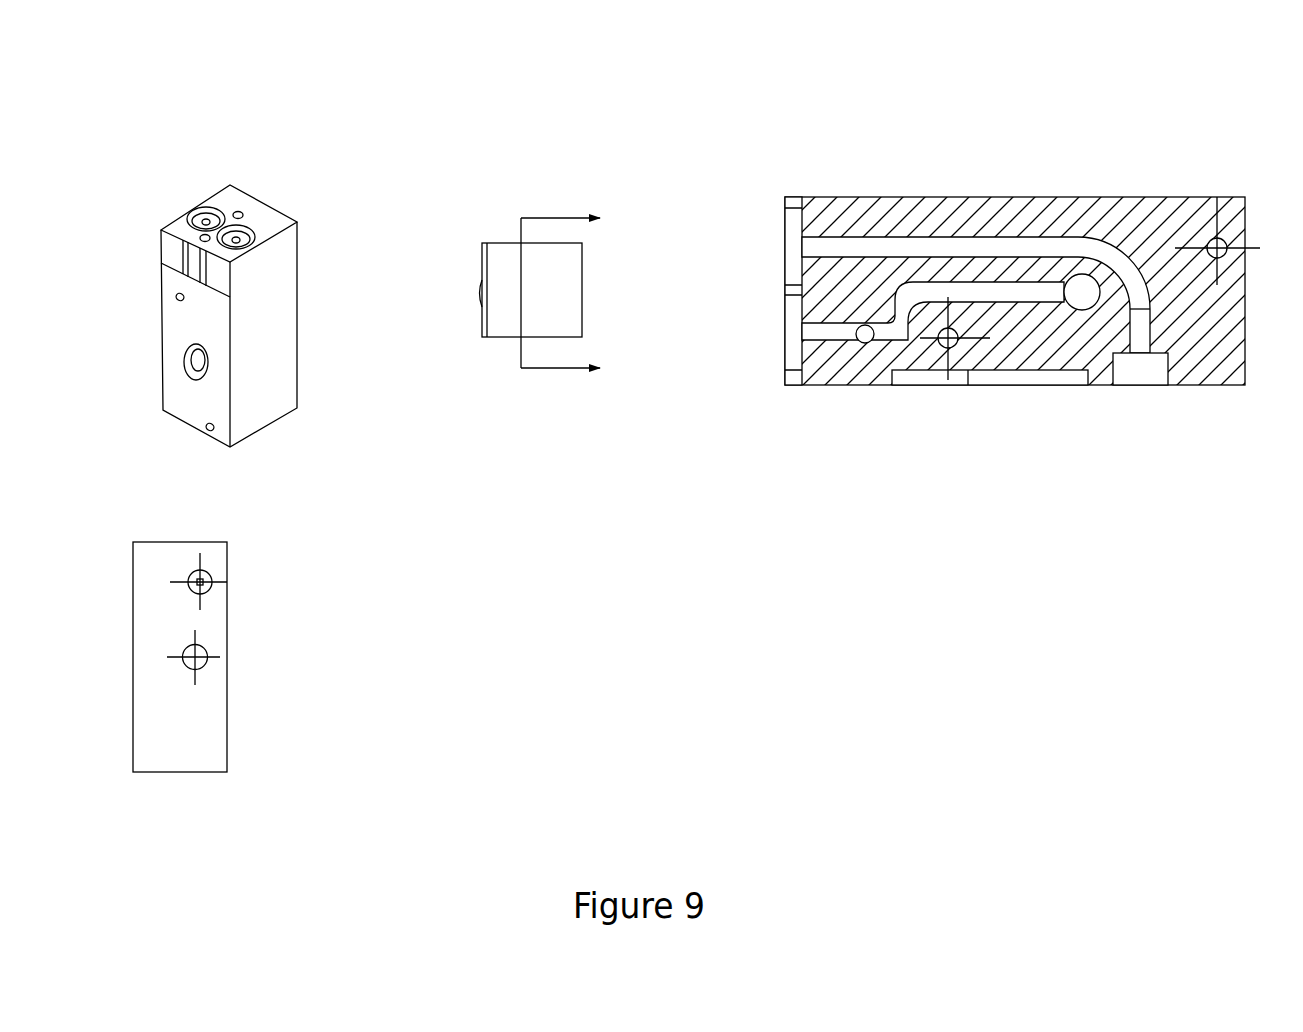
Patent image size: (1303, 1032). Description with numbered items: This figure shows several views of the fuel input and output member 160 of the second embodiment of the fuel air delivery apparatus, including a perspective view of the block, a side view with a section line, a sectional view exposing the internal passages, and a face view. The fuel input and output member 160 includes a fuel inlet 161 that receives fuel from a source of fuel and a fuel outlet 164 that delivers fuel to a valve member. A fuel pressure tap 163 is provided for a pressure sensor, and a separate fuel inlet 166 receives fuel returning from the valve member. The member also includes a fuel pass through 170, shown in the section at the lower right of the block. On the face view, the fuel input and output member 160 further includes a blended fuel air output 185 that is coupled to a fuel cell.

The fuel input and output member 160 is at (322, 202).
The fuel inlet 161 is at (863, 345).
The fuel pressure tap 163 is at (1082, 312).
The fuel outlet 164 is at (802, 332).
The fuel inlet 166 is at (802, 248).
The fuel pass through 170 is at (1138, 388).
The blended fuel air output 185 is at (222, 660).